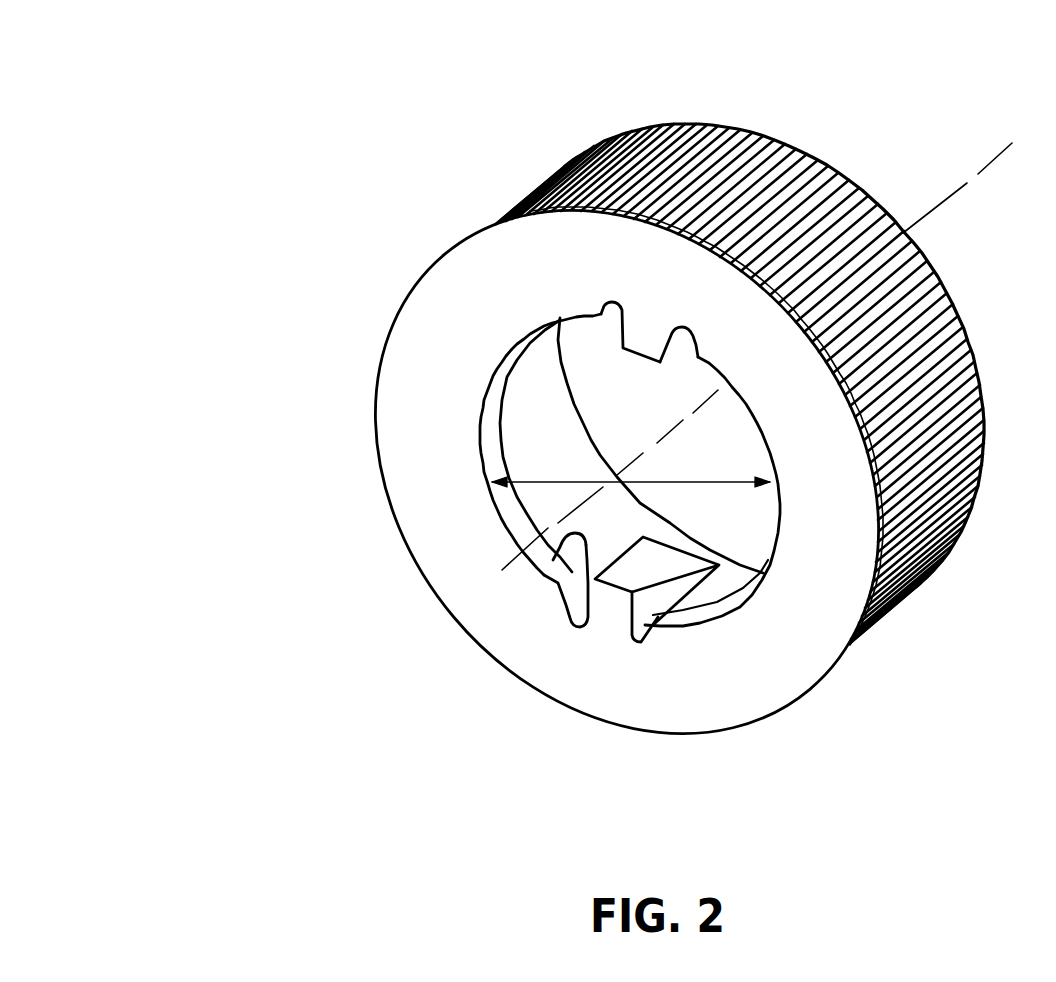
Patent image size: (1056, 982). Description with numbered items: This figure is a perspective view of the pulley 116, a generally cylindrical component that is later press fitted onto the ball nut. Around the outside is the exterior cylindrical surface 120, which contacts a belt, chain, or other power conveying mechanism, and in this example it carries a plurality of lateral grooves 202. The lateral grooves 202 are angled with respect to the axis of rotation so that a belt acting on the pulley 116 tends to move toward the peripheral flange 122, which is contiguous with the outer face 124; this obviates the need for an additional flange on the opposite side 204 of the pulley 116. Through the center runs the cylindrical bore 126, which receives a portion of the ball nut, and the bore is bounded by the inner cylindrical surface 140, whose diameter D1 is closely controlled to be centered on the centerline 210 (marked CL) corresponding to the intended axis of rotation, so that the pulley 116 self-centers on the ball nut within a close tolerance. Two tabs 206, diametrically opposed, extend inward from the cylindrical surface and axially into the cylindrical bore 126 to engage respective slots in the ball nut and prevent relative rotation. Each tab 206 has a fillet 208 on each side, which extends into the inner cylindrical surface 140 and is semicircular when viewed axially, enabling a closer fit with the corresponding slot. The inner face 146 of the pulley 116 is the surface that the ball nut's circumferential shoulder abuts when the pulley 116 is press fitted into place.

The pulley 116 is at (91, 68).
The exterior cylindrical surface 120 is at (767, 126).
The peripheral flange 122 is at (840, 670).
The outer face 124 is at (413, 514).
The cylindrical bore 126 is at (542, 447).
The inner cylindrical surface 140 is at (482, 457).
The inner face 146 is at (578, 560).
The lateral grooves 202 is at (650, 162).
The opposite side 204 is at (583, 421).
The tabs 206 is at (671, 353).
The fillet 208 is at (615, 307).
The centerline 210 is at (979, 171).
The centerline CL is at (1033, 138).
The diameter D1 is at (605, 482).